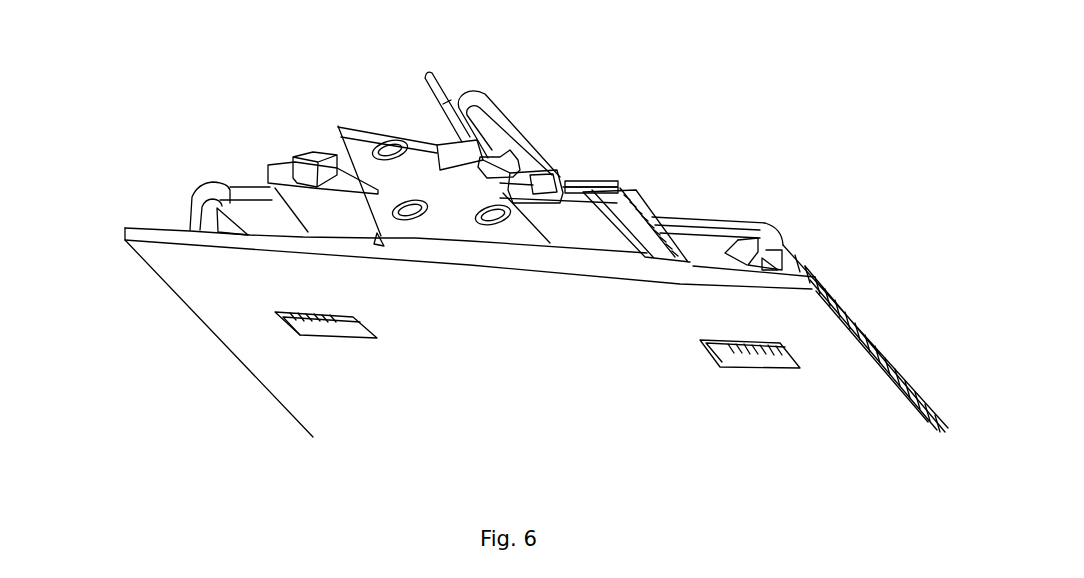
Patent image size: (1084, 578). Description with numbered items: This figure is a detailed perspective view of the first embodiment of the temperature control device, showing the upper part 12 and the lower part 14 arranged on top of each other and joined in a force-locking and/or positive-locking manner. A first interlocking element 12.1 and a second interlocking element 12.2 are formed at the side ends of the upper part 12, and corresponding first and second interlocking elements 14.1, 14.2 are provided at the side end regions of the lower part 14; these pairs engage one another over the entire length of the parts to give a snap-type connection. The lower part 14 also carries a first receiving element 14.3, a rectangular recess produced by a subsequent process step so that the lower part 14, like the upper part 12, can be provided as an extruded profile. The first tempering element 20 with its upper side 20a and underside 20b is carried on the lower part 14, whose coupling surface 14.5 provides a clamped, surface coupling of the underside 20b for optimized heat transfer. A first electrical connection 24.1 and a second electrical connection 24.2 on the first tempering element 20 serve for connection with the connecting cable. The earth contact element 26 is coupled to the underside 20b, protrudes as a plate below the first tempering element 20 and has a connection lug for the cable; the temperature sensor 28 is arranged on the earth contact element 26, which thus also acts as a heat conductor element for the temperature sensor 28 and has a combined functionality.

The upper part 12 is at (705, 218).
The first interlocking element 12.1 is at (190, 208).
The second interlocking element 12.2 is at (796, 250).
The lower part 14 is at (170, 266).
The first interlocking element 14.1 is at (230, 192).
The second interlocking element 14.2 is at (747, 254).
The first receiving element 14.3 is at (291, 322).
The coupling surface 14.5 is at (392, 242).
The first tempering element 20 is at (556, 225).
The upper side 20a is at (618, 182).
The underside 20b is at (600, 226).
The first electrical connection 24.1 is at (312, 150).
The second electrical connection 24.2 is at (567, 175).
The earth contact element 26 is at (455, 218).
The temperature sensor 28 is at (427, 143).